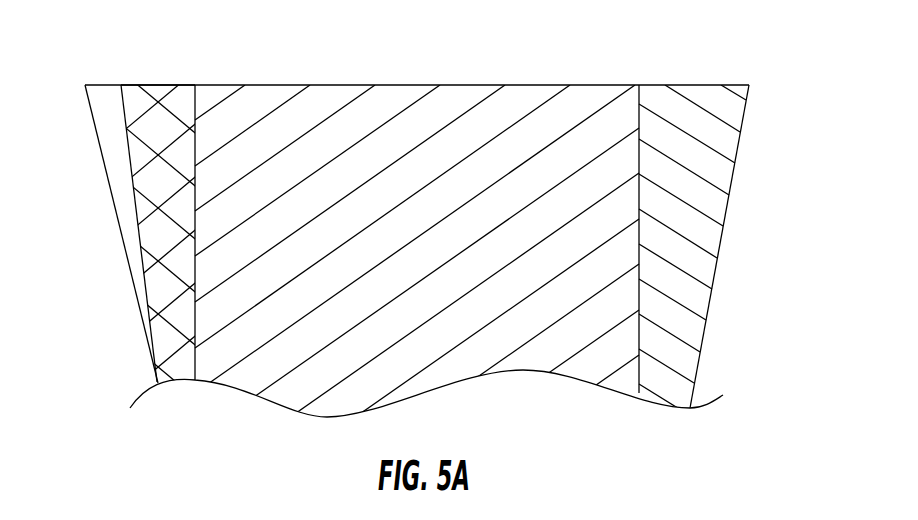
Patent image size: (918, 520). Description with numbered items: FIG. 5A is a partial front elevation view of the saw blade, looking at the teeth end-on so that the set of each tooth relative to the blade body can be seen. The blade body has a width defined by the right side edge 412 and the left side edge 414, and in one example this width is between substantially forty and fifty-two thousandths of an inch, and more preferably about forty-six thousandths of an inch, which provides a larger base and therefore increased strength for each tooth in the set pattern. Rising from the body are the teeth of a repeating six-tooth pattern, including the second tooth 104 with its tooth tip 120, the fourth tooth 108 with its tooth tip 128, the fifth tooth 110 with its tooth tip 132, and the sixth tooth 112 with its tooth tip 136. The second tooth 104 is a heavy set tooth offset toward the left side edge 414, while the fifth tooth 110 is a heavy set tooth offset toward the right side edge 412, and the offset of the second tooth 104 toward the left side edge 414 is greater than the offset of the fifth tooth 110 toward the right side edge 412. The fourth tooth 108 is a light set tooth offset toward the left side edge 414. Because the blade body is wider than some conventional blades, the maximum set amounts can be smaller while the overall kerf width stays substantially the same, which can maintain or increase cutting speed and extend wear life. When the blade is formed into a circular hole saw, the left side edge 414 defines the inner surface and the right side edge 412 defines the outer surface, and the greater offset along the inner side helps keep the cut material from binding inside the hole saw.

The second tooth 104 is at (118, 168).
The fourth tooth 108 is at (183, 211).
The fifth tooth 110 is at (700, 212).
The sixth tooth 112 is at (435, 248).
The tooth tip 120 is at (102, 84).
The tooth tip 128 is at (148, 85).
The tooth tip 132 is at (703, 85).
The tooth tip 136 is at (463, 85).
The right side edge 412 is at (657, 285).
The left side edge 414 is at (183, 355).